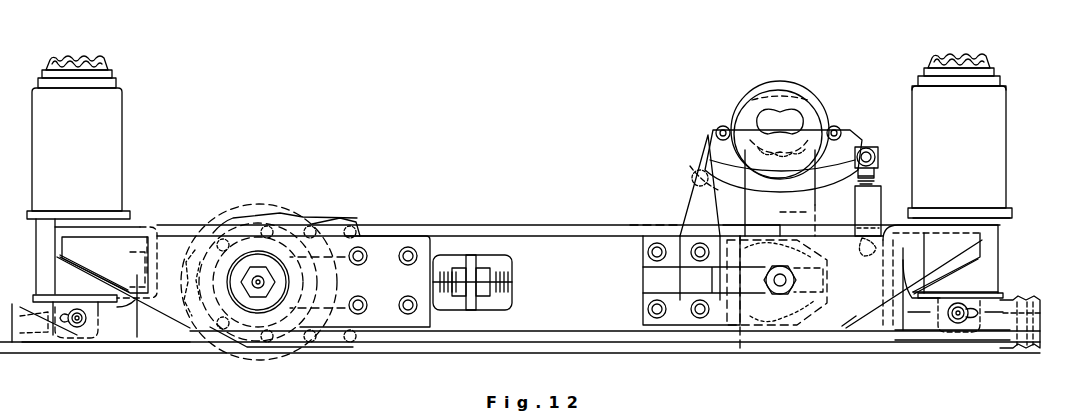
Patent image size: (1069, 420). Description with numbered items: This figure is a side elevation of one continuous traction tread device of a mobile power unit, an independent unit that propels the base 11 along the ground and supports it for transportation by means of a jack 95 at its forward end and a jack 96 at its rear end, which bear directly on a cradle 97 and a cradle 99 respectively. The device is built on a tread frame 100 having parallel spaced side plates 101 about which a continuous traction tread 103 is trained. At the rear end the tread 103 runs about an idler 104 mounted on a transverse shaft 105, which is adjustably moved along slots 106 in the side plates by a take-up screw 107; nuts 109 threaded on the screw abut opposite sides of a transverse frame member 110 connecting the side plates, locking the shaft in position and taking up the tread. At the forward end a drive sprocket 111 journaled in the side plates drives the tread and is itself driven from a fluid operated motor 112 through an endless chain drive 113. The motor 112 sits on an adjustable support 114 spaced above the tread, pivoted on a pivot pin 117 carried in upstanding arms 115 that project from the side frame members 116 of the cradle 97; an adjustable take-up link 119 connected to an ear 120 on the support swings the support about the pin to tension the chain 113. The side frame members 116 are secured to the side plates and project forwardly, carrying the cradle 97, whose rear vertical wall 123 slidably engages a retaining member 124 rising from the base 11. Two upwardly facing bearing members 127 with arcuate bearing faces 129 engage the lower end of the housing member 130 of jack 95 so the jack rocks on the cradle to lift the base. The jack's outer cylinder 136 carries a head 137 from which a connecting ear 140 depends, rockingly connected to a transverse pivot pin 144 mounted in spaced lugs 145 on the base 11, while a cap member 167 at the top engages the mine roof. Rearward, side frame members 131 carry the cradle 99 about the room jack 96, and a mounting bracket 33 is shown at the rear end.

The base 11 is at (389, 224).
The mounting bracket 33 is at (55, 220).
The jack 95 is at (998, 168).
The jack 96 is at (124, 156).
The cradle 97 is at (985, 228).
The cradle 99 is at (128, 212).
The tread frame 100 is at (519, 242).
The side plate 101 is at (592, 234).
The continuous traction tread 103 is at (284, 224).
The idler 104 is at (330, 222).
The transverse shaft 105 is at (256, 276).
The slot 106 is at (276, 262).
The take-up screw 107 is at (440, 270).
The nut 109 is at (482, 268).
The transverse frame member 110 is at (472, 310).
The drive sprocket 111 is at (742, 353).
The motor 112 is at (824, 110).
The endless chain drive 113 is at (808, 226).
The adjustable support 114 is at (716, 168).
The upstanding arm 115 is at (683, 214).
The side frame member 116 is at (686, 318).
The pivot pin 117 is at (700, 170).
The adjustable take-up link 119 is at (870, 203).
The ear 120 is at (876, 154).
The rear vertical wall 123 is at (874, 324).
The retaining member 124 is at (856, 250).
The bearing member 127 is at (1004, 220).
The arcuate bearing face 129 is at (944, 220).
The housing member 130 is at (1005, 102).
The side frame member 131 is at (180, 307).
The outer cylinder 136 is at (999, 268).
The head 137 is at (1003, 296).
The connecting ear 140 is at (978, 302).
The transverse pivot pin 144 is at (957, 324).
The lug 145 is at (928, 322).
The cap member 167 is at (108, 60).